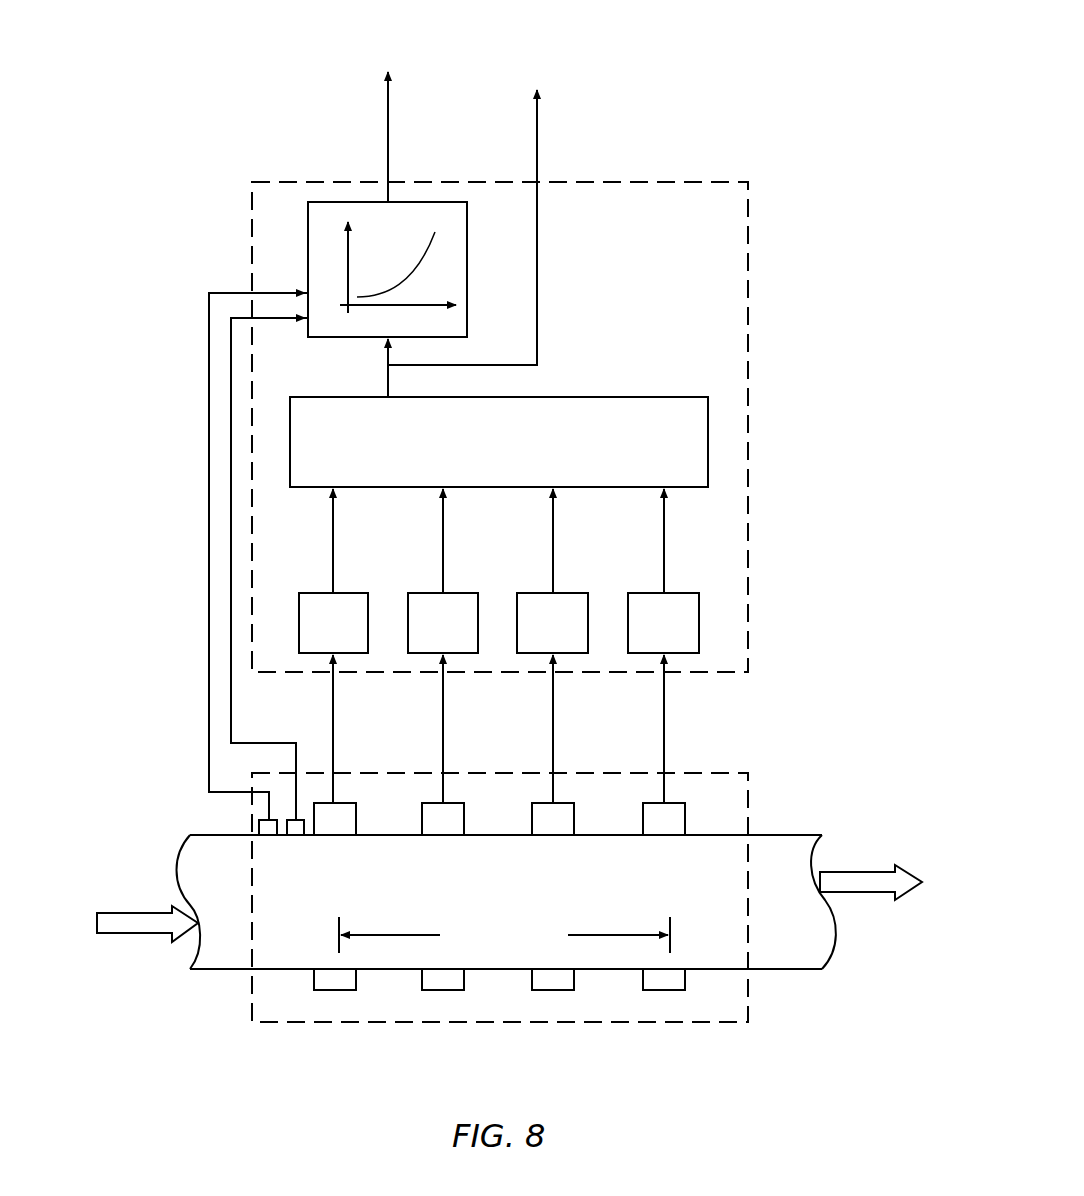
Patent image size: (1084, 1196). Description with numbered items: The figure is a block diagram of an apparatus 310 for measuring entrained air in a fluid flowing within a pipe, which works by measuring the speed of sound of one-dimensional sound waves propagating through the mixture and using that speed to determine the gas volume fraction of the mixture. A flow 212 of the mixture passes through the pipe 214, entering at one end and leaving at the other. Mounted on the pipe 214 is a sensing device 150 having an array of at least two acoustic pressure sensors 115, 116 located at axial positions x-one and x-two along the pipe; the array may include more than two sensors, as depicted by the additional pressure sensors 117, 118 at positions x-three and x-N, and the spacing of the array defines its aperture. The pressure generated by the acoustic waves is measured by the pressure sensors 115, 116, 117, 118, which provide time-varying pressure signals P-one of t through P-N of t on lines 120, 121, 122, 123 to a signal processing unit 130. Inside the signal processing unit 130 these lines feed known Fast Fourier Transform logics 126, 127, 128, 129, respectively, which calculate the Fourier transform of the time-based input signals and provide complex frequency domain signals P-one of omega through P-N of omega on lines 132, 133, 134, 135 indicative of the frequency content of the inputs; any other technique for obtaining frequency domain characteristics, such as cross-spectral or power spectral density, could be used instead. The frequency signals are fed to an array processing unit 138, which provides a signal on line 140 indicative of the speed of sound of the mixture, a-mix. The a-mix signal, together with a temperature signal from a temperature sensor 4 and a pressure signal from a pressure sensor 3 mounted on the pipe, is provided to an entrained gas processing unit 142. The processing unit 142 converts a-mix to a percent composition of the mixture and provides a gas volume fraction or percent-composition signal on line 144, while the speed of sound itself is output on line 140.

The pressure sensor 3 is at (268, 836).
The temperature sensor 4 is at (296, 836).
The acoustic pressure sensor 115 is at (350, 802).
The acoustic pressure sensor 116 is at (460, 802).
The pressure sensor 117 is at (570, 802).
The pressure sensor 118 is at (680, 802).
The line 120 is at (333, 688).
The line 121 is at (443, 688).
The line 122 is at (553, 688).
The line 123 is at (664, 688).
The Fast Fourier Transform logic 126 is at (350, 592).
The Fast Fourier Transform logic 127 is at (460, 592).
The Fast Fourier Transform logic 128 is at (570, 592).
The Fast Fourier Transform logic 129 is at (681, 592).
The signal processing unit 130 is at (749, 228).
The line 132 is at (331, 521).
The line 133 is at (441, 521).
The line 134 is at (551, 521).
The line 135 is at (662, 521).
The array processing unit 138 is at (690, 397).
The line 140 is at (537, 157).
The entrained gas processing unit 142 is at (308, 222).
The line 144 is at (388, 145).
The sensing device 150 is at (750, 1012).
The flow 212 is at (140, 912).
The pipe 214 is at (793, 835).
The apparatus 310 is at (805, 360).